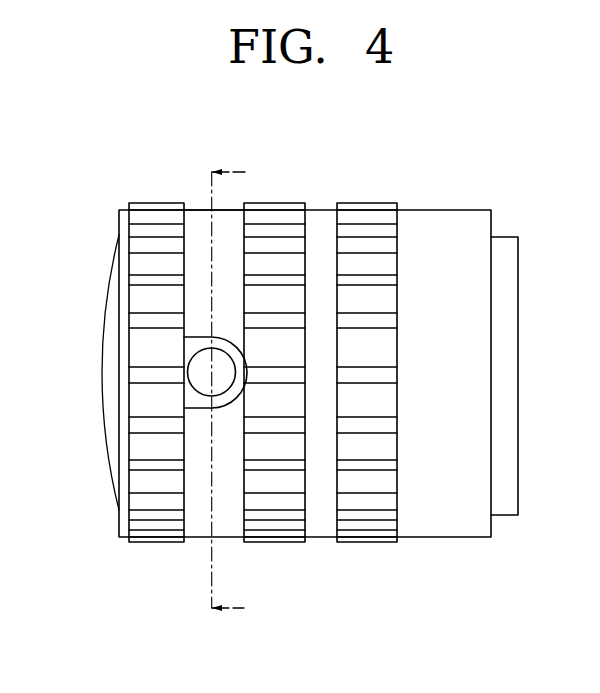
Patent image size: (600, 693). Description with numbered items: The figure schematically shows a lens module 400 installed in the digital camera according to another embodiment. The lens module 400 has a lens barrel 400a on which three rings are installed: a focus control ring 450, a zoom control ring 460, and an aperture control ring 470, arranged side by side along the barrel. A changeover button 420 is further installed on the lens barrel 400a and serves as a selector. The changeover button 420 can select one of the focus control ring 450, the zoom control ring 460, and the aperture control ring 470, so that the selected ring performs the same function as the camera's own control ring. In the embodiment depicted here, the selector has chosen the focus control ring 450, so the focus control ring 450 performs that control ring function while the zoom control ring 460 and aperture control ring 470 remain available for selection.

The lens module 400 is at (392, 187).
The lens barrel 400a is at (202, 217).
The changeover button 420 is at (198, 365).
The focus control ring 450 is at (157, 542).
The zoom control ring 460 is at (282, 542).
The aperture control ring 470 is at (372, 542).